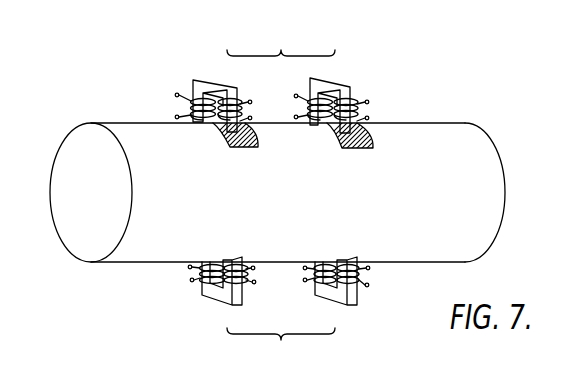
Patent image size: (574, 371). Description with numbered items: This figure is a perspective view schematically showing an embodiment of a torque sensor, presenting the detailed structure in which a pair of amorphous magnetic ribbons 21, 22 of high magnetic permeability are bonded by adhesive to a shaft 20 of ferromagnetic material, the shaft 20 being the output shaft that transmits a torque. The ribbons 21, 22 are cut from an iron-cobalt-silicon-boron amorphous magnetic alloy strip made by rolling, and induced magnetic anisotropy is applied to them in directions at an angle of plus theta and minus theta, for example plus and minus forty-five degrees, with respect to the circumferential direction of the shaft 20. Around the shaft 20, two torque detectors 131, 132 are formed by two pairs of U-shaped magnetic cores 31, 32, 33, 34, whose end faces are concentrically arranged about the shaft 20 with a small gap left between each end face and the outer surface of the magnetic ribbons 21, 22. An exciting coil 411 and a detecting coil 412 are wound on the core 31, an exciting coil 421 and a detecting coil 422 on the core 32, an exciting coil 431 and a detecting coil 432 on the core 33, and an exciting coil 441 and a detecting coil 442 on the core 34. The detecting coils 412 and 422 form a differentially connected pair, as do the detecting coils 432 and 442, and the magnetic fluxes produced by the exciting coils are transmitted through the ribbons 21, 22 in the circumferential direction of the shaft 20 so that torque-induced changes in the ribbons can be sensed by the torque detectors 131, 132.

The shaft 20 is at (500, 153).
The amorphous magnetic ribbon 21 is at (243, 147).
The amorphous magnetic ribbon 22 is at (358, 148).
The U-shaped magnetic core 31 is at (213, 80).
The U-shaped magnetic core 32 is at (338, 86).
The U-shaped magnetic core 33 is at (217, 303).
The U-shaped magnetic core 34 is at (332, 297).
The torque detector 131 is at (296, 44).
The torque detector 132 is at (281, 347).
The exciting coil 411 is at (175, 96).
The detecting coil 412 is at (240, 107).
The exciting coil 421 is at (305, 110).
The detecting coil 422 is at (360, 107).
The exciting coil 431 is at (189, 279).
The detecting coil 432 is at (255, 273).
The exciting coil 441 is at (305, 268).
The detecting coil 442 is at (364, 279).